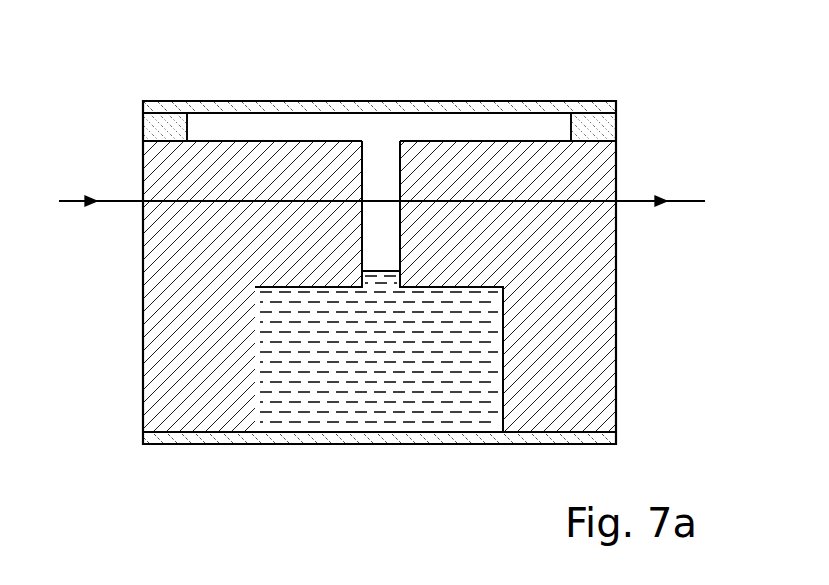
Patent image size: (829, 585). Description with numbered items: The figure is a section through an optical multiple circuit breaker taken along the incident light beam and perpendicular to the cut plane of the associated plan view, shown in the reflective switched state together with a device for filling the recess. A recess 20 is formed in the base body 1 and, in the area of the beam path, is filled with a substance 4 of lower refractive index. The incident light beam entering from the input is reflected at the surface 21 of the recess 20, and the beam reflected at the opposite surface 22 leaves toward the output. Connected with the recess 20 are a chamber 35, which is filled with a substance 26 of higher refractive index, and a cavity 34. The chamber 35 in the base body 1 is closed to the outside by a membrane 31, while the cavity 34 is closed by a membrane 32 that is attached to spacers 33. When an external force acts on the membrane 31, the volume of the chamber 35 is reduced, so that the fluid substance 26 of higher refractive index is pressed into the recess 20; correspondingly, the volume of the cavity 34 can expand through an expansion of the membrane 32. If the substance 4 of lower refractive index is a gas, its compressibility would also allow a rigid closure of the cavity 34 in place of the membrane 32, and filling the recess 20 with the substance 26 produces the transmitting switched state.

The base body 1 is at (617, 173).
The substance of lower refractive index 4 is at (473, 130).
The recess 20 is at (360, 177).
The surface 21 is at (364, 143).
The surface 22 is at (400, 150).
The substance of higher refractive index 26 is at (318, 412).
The membrane 31 is at (378, 437).
The membrane 32 is at (563, 110).
The spacers 33 is at (603, 128).
The cavity 34 is at (258, 125).
The chamber 35 is at (502, 367).